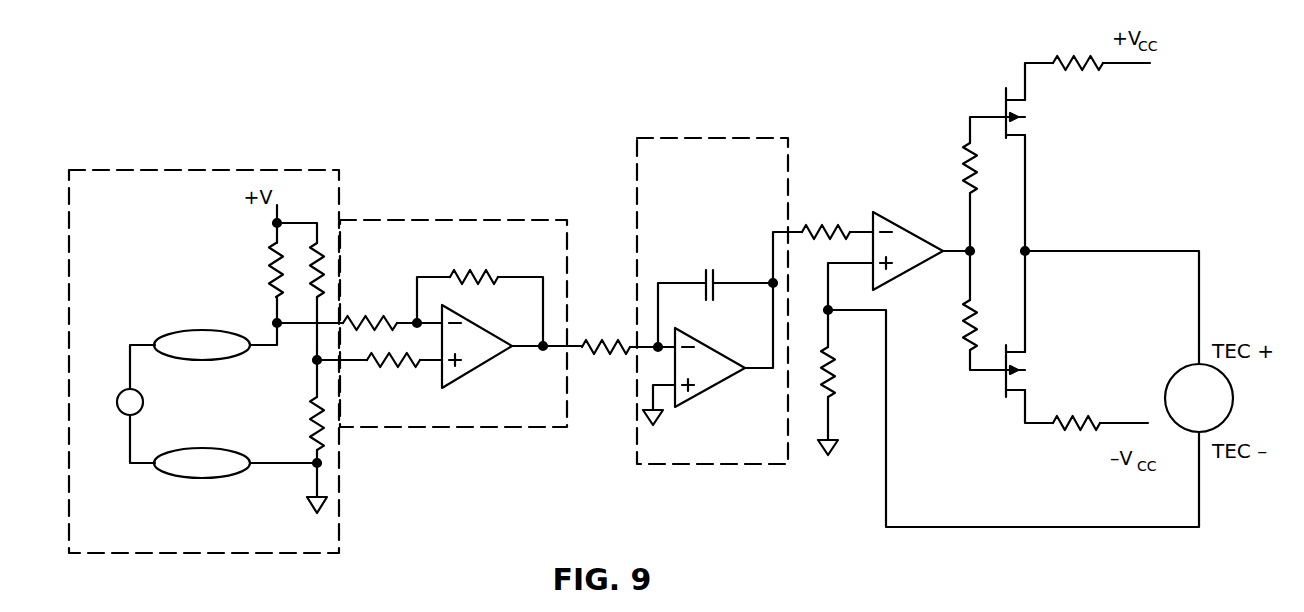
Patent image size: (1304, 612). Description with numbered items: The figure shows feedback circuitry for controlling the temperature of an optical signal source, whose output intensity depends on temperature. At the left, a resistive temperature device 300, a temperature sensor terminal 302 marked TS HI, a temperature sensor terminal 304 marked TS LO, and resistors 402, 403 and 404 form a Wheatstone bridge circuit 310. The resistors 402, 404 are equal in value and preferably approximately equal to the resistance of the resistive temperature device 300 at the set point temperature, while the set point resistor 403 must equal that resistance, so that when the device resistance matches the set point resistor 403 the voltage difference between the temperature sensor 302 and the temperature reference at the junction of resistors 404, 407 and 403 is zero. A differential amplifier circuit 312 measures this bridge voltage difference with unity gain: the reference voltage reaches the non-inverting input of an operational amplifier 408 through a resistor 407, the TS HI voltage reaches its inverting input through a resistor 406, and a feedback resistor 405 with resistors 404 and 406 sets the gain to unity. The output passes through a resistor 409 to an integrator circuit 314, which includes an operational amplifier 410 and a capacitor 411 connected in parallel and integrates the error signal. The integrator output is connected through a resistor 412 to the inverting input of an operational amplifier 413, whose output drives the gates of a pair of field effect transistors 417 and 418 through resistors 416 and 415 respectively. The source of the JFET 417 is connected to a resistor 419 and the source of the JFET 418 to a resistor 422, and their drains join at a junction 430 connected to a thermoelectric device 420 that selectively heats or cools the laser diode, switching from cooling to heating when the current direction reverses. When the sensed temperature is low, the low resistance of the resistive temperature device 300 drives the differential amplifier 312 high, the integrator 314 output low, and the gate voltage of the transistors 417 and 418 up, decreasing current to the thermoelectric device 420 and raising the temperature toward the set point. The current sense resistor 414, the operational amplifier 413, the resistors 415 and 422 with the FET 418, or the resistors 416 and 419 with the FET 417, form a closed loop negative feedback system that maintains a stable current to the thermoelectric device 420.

The resistive temperature device 300 is at (125, 390).
The temperature sensor terminal 302 is at (215, 328).
The temperature sensor terminal 304 is at (190, 481).
The Wheatstone bridge circuit 310 is at (197, 171).
The differential amplifier circuit 312 is at (473, 428).
The integrator circuit 314 is at (735, 138).
The resistor 402 is at (272, 265).
The set point resistor 403 is at (313, 420).
The resistor 404 is at (323, 275).
The resistor 405 is at (484, 272).
The resistor 406 is at (380, 317).
The resistor 407 is at (382, 362).
The operational amplifier 408 is at (497, 368).
The resistor 409 is at (585, 341).
The operational amplifier 410 is at (717, 386).
The capacitor 411 is at (716, 272).
The resistor 412 is at (807, 223).
The operational amplifier 413 is at (915, 267).
The current sense resistor 414 is at (833, 352).
The resistor 415 is at (975, 330).
The resistor 416 is at (967, 162).
The field effect transistor 417 is at (1000, 90).
The field effect transistor 418 is at (1000, 393).
The resistor 419 is at (1080, 66).
The thermoelectric device 420 is at (1178, 368).
The resistor 422 is at (1088, 418).
The junction 430 is at (1030, 251).